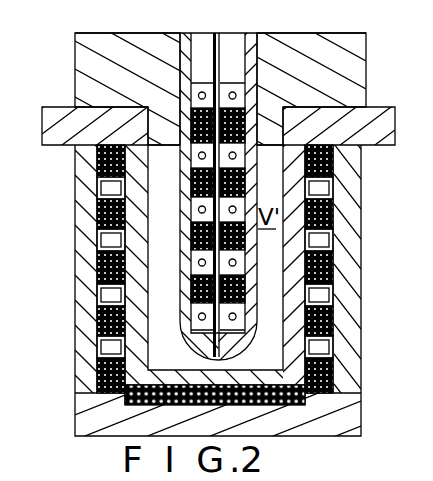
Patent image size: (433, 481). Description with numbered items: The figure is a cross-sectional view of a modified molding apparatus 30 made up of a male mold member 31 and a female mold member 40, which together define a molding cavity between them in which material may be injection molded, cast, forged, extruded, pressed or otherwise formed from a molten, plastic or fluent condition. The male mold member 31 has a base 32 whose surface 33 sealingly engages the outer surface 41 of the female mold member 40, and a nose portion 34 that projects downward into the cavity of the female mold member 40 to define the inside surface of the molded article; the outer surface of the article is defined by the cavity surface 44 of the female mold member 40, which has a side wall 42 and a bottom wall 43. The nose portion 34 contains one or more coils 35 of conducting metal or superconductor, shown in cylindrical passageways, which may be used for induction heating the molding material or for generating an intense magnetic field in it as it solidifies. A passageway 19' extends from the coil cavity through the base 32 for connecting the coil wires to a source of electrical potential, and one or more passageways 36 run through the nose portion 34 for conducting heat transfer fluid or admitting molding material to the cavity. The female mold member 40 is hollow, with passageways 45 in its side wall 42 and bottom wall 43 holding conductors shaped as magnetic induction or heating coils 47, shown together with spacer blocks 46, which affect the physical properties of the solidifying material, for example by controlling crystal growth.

The molding apparatus 30 is at (75, 93).
The male mold member 31 is at (366, 68).
The base 32 is at (357, 52).
The surface 33 is at (343, 108).
The nose portion 34 is at (255, 306).
The coils 35 is at (194, 290).
The passageways 36 is at (215, 33).
The probe tube 19' is at (220, 209).
The female mold member 40 is at (360, 392).
The outer surface 41 is at (378, 110).
The side wall 42 is at (343, 333).
The bottom wall 43 is at (347, 417).
The cavity surface 44 is at (190, 370).
The passageways 45 is at (100, 268).
The spacer block 46 is at (100, 193).
The coils 47 is at (334, 278).